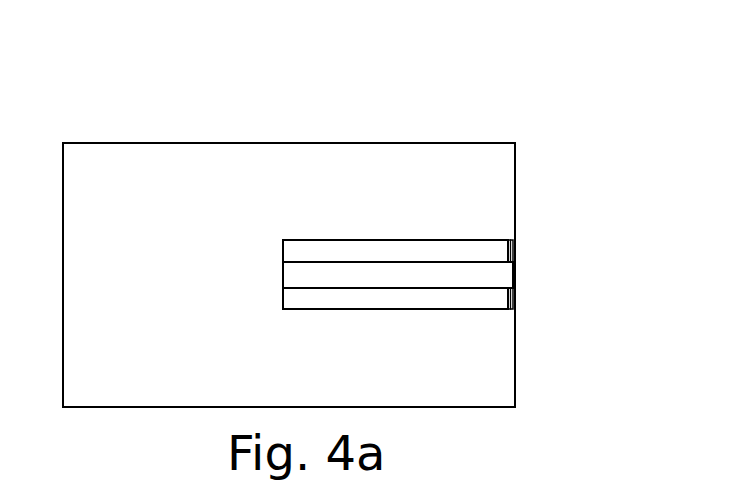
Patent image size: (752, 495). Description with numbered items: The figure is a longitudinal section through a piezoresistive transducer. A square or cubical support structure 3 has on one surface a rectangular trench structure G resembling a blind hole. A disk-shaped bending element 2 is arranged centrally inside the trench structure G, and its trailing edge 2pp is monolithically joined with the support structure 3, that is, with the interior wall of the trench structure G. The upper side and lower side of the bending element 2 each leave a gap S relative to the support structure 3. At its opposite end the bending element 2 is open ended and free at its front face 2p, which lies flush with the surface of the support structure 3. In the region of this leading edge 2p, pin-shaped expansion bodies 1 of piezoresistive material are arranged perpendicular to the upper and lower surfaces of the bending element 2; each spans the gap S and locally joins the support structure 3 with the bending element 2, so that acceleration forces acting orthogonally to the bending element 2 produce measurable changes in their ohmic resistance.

The expansion bodies 1 is at (513, 248).
The bending element 2 is at (465, 270).
The front face 2p is at (518, 268).
The trailing edge 2pp is at (283, 272).
The support structure 3 is at (485, 190).
The trench structure G is at (375, 241).
The gap S is at (417, 251).